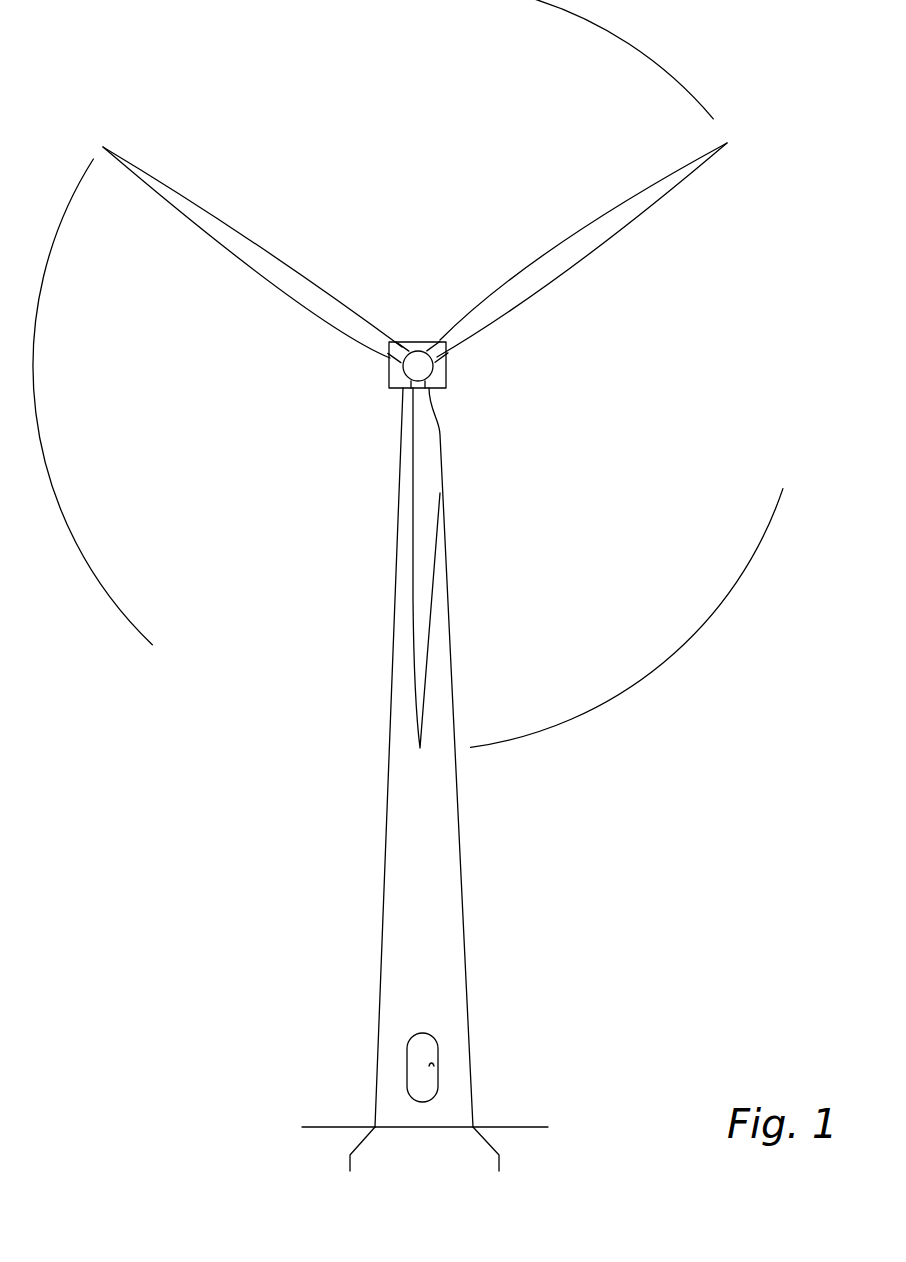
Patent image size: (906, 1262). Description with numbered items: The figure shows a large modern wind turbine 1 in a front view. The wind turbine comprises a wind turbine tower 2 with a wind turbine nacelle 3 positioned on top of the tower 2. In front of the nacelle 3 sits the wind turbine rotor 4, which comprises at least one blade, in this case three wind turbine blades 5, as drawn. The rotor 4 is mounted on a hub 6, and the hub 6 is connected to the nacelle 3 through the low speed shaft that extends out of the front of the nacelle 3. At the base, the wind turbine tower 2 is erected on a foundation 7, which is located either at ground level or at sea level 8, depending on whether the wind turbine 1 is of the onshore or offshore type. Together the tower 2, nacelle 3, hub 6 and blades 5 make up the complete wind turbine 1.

The wind turbine 1 is at (372, 943).
The wind turbine tower 2 is at (452, 835).
The wind turbine nacelle 3 is at (446, 388).
The wind turbine rotor 4 is at (683, 603).
The wind turbine blades 5 is at (422, 605).
The hub 6 is at (417, 356).
The foundation 7 is at (358, 1158).
The sea level 8 is at (548, 1127).